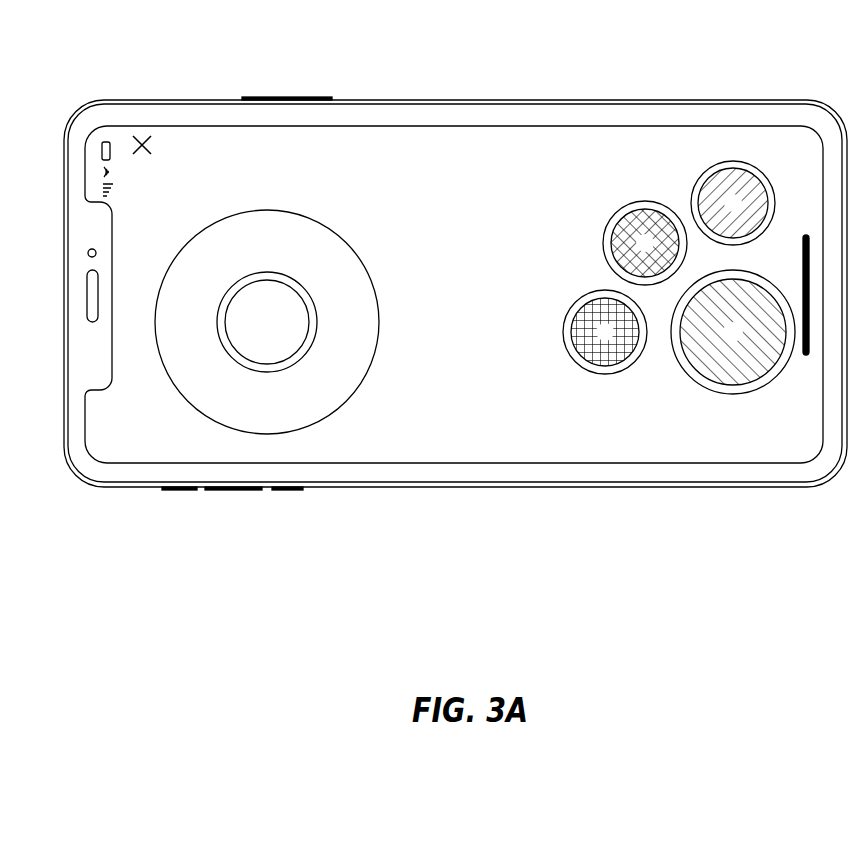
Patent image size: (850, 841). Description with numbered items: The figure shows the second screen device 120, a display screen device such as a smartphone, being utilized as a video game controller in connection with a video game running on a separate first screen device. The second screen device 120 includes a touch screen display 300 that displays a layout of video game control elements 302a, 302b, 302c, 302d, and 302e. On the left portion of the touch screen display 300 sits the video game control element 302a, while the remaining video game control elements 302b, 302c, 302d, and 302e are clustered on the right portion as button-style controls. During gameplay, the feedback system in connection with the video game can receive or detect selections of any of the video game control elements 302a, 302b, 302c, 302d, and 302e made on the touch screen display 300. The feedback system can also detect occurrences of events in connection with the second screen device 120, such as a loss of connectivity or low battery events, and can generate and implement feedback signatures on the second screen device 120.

The second screen device 120 is at (704, 100).
The touch screen display 300 is at (515, 132).
The video game control element 302a is at (267, 210).
The video game control element 302b is at (580, 308).
The video game control element 302c is at (620, 218).
The video game control element 302d is at (706, 178).
The video game control element 302e is at (705, 375).